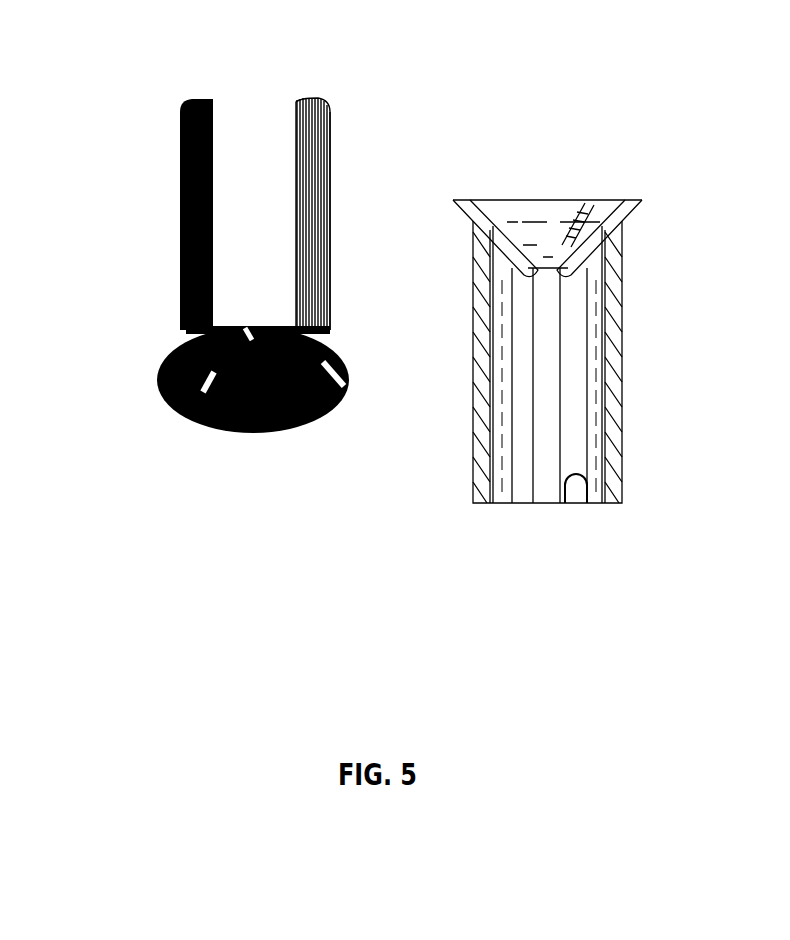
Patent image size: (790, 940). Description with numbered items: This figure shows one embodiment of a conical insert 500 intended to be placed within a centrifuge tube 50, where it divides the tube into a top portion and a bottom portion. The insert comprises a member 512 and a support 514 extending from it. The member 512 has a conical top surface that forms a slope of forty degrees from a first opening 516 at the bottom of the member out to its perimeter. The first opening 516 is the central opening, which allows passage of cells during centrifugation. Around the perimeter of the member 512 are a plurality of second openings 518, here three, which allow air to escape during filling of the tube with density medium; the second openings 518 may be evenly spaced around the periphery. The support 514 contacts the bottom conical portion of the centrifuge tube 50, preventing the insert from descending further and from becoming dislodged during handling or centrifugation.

The conical insert 500 is at (148, 142).
The support 514 is at (288, 193).
The member 512 is at (165, 391).
The first opening 516 is at (253, 332).
The second openings 518 is at (232, 322).
The centrifuge tube 50 is at (571, 270).